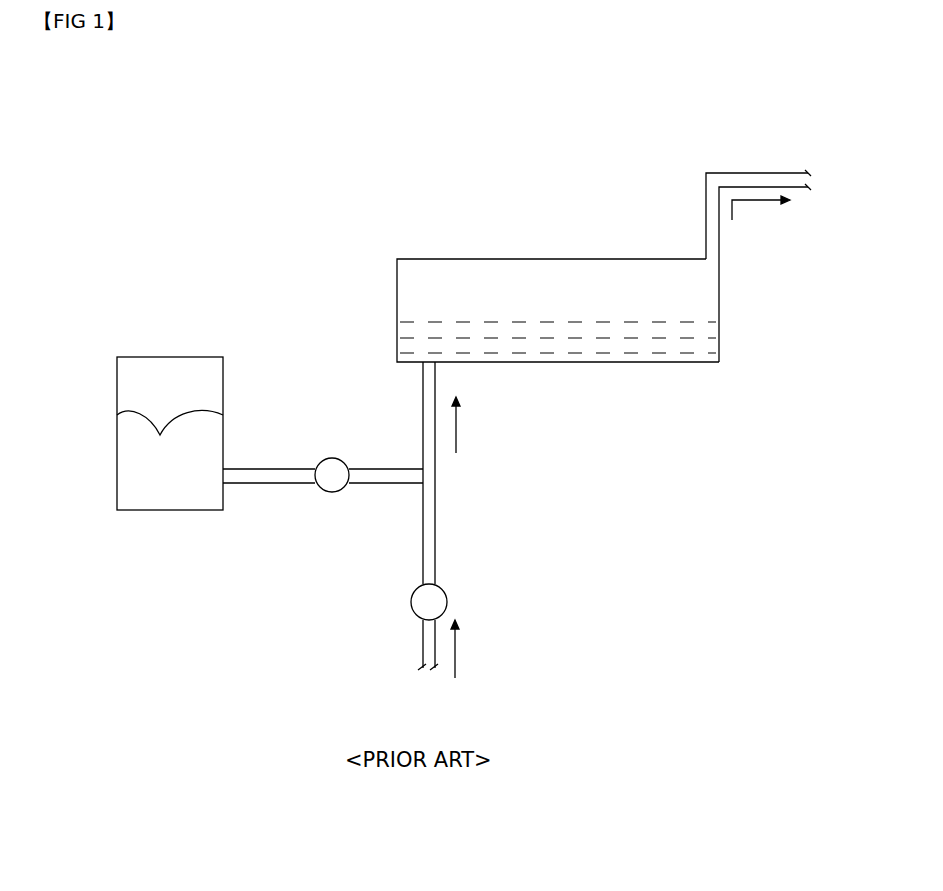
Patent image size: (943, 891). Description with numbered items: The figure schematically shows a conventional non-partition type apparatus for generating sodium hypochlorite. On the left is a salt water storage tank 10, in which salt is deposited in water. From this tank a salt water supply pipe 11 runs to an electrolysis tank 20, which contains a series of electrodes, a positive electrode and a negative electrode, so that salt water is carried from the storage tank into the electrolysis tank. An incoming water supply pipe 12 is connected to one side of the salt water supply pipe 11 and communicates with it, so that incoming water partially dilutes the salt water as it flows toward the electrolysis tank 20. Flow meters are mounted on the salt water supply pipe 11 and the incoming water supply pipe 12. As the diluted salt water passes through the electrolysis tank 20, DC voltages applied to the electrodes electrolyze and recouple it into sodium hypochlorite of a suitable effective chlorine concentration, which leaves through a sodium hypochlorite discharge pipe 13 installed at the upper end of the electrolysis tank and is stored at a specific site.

The salt water storage tank 10 is at (188, 357).
The salt water supply pipe 11 is at (270, 484).
The incoming water supply pipe 12 is at (437, 512).
The sodium hypochlorite discharge pipe 13 is at (755, 172).
The electrolysis tank 20 is at (719, 320).